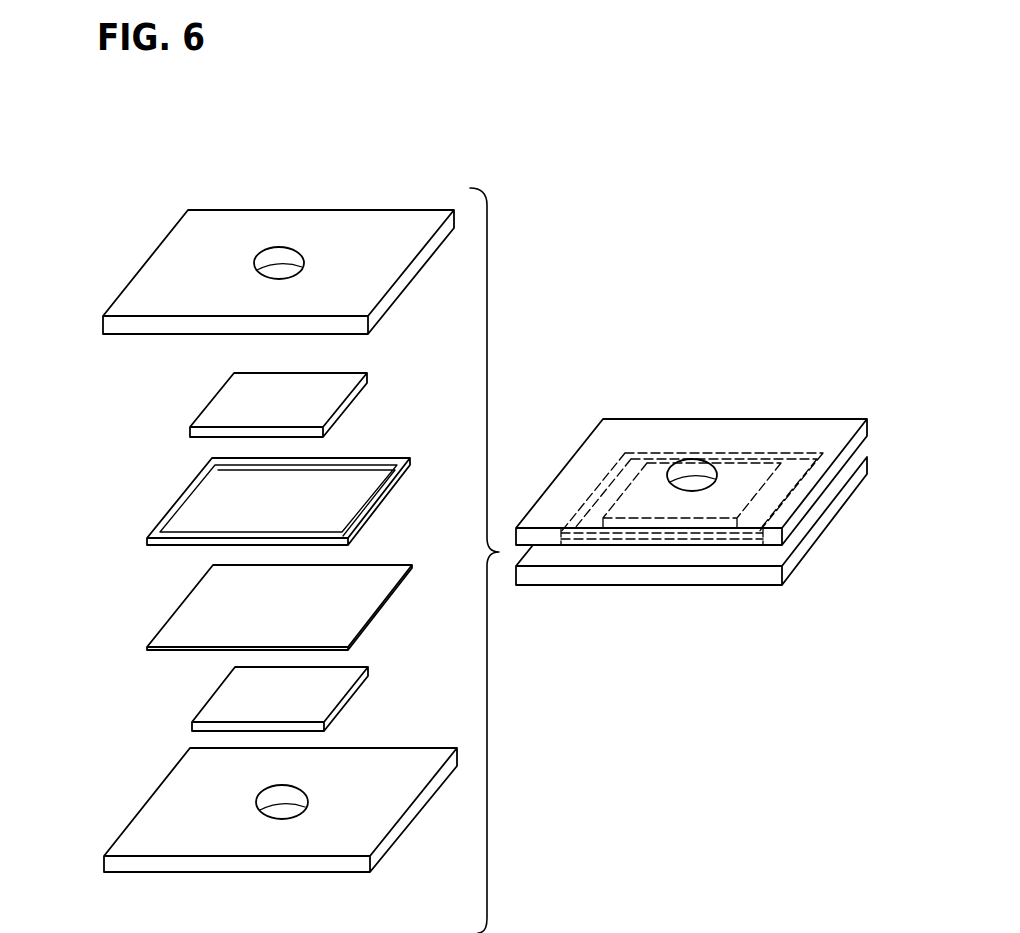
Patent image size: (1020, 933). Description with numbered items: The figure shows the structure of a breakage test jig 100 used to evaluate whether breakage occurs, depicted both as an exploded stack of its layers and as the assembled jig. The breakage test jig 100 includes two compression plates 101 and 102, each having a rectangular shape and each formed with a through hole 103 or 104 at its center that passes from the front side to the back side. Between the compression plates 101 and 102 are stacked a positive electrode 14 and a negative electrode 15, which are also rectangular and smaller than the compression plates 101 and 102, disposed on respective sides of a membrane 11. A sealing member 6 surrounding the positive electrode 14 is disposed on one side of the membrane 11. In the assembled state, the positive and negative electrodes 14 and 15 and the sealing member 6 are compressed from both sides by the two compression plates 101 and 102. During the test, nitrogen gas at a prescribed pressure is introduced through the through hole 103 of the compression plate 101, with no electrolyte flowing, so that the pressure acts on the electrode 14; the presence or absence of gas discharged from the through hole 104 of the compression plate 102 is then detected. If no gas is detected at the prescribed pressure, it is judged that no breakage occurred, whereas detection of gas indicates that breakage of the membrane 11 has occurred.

The breakage test jig 100 is at (643, 417).
The compression plate 101 is at (178, 280).
The compression plate 102 is at (170, 815).
The through hole 103 is at (283, 257).
The through hole 104 is at (267, 815).
The sealing member 6 is at (187, 483).
The membrane 11 is at (200, 605).
The positive electrode 14 is at (232, 417).
The negative electrode 15 is at (235, 698).